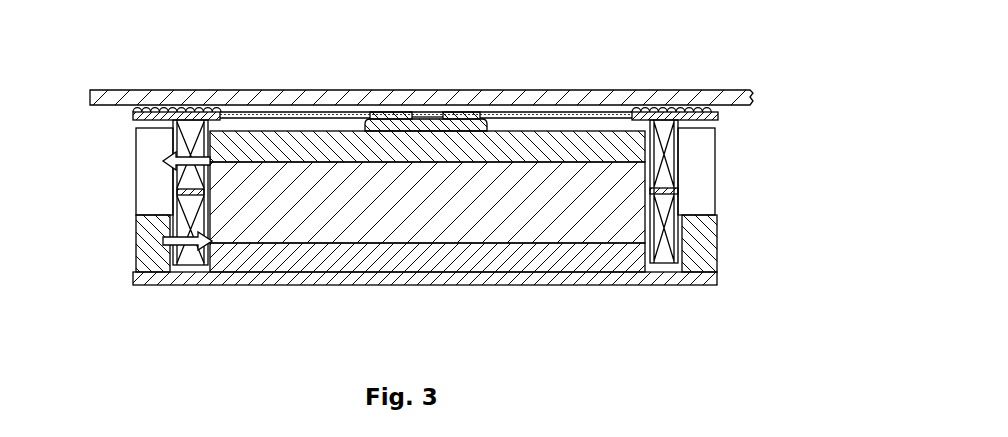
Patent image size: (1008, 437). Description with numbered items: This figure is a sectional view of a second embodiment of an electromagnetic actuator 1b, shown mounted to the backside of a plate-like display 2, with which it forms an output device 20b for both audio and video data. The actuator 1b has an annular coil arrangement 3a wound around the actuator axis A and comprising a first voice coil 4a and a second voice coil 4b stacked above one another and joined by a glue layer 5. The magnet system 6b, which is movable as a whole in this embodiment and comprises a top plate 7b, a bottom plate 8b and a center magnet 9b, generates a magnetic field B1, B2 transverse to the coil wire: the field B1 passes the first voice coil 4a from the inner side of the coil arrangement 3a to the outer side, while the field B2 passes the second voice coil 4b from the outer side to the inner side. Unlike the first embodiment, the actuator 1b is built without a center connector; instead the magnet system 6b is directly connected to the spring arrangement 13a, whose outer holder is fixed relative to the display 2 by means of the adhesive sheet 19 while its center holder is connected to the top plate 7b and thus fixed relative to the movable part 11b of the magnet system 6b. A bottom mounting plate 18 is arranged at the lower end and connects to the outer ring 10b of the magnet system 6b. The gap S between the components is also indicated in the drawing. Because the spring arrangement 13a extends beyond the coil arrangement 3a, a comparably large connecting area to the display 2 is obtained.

The electromagnetic actuator 1b is at (710, 308).
The display 2 is at (185, 95).
The annular coil arrangement 3a is at (341, 192).
The first voice coil 4a is at (187, 132).
The second voice coil 4b is at (183, 255).
The glue layer 5 is at (180, 190).
The magnet system 6b is at (867, 128).
The top plate 7b is at (636, 151).
The bottom plate 8b is at (628, 254).
The center magnet 9b is at (632, 200).
The outer ring 10b is at (735, 252).
The movable part 11b is at (501, 209).
The spring arrangement 13a is at (550, 115).
The bottom mounting plate 18 is at (157, 280).
The adhesive sheet 19 is at (143, 110).
The output device 20b is at (728, 53).
The actuator axis A is at (425, 317).
The gap S is at (362, 88).
The magnetic field B1 is at (198, 163).
The magnetic field B2 is at (203, 240).